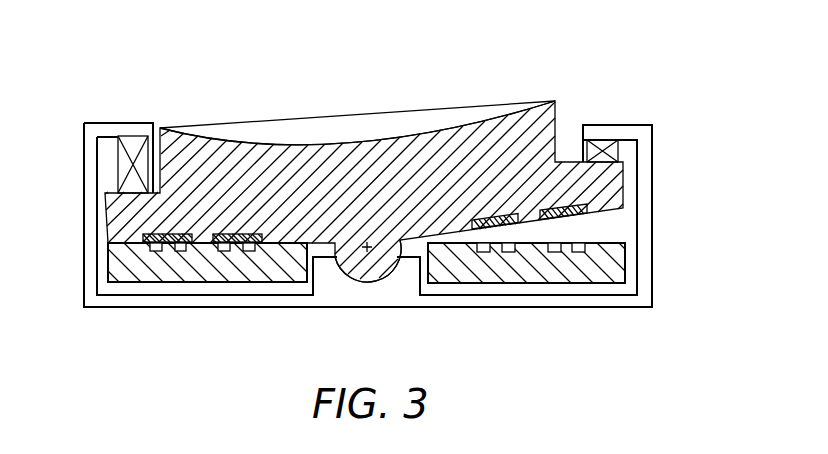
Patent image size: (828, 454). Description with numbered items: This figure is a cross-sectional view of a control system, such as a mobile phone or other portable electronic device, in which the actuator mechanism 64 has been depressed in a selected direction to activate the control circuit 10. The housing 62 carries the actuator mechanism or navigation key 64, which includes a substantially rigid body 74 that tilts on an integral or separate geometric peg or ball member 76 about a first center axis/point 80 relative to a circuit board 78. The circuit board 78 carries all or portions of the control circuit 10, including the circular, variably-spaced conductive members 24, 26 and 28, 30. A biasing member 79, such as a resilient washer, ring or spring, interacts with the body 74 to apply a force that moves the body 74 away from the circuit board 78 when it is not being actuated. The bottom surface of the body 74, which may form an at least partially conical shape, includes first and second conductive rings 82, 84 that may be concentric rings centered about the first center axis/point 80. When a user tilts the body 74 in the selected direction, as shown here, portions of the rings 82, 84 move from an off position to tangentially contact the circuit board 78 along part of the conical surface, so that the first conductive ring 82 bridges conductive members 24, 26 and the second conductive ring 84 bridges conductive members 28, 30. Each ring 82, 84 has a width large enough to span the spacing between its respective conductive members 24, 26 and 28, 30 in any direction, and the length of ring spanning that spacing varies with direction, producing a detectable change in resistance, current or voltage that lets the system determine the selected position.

The control circuit 10 is at (604, 232).
The conductive member 24 is at (210, 278).
The conductive member 26 is at (250, 252).
The conductive member 28 is at (152, 250).
The conductive member 30 is at (180, 251).
The housing 62 is at (84, 253).
The actuator mechanism 64 is at (189, 54).
The body 74 is at (230, 130).
The ball member 76 is at (380, 272).
The circuit board 78 is at (556, 253).
The biasing member 79 is at (118, 168).
The first center axis/point 80 is at (363, 251).
The first conductive ring 82 is at (305, 178).
The second conductive ring 84 is at (235, 175).